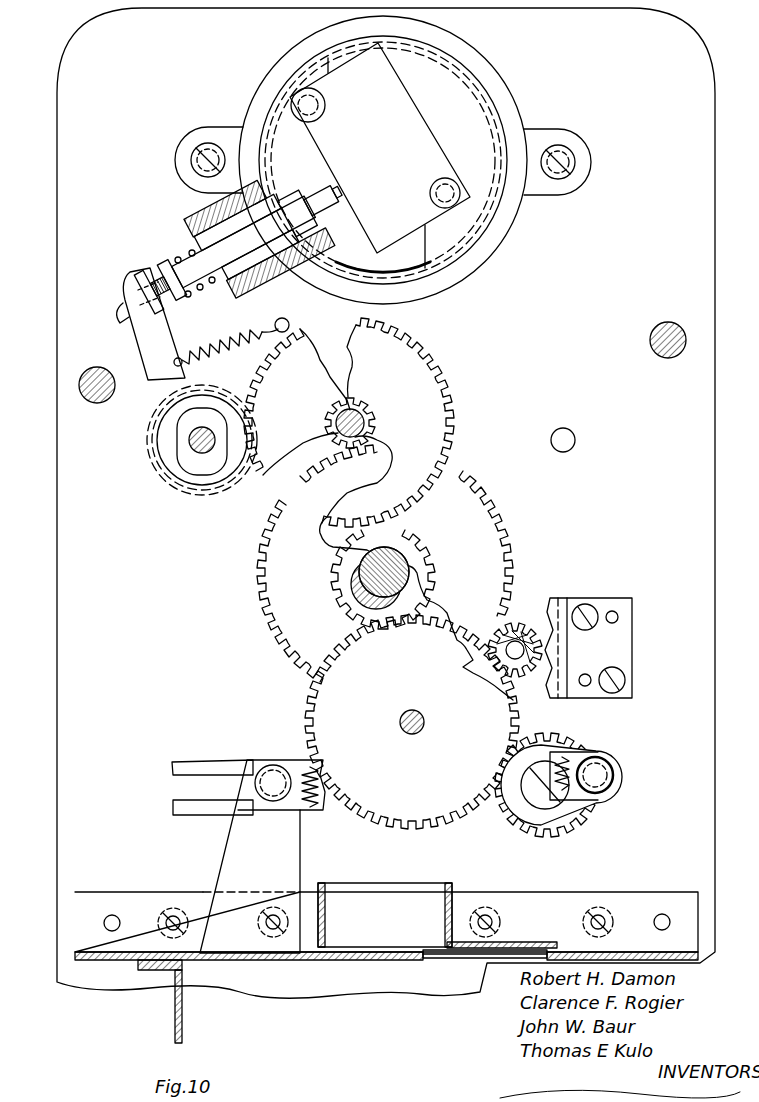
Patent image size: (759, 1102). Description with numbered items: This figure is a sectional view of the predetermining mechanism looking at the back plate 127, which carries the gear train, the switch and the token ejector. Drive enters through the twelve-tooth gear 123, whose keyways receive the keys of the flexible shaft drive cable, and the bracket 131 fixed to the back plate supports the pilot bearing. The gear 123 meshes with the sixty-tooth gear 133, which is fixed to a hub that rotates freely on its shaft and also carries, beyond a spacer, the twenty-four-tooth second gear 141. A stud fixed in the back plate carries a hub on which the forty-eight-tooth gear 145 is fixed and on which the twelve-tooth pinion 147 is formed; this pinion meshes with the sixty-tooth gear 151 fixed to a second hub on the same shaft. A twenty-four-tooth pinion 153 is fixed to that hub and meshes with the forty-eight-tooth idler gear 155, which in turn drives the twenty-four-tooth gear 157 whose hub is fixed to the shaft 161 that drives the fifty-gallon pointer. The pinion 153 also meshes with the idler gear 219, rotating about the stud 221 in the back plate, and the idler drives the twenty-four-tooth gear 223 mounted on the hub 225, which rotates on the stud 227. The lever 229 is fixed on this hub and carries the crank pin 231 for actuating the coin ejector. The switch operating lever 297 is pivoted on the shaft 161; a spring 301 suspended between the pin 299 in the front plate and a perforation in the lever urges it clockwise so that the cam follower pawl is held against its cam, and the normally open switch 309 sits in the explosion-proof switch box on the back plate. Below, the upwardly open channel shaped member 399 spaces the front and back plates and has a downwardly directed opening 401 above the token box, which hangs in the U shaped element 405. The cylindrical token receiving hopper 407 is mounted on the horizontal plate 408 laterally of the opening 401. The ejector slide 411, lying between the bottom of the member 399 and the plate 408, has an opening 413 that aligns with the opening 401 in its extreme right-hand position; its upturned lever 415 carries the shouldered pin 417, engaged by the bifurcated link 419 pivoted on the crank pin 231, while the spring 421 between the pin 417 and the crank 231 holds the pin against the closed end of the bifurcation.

The back plate 127 is at (634, 280).
The normally open switch 309 is at (405, 114).
The switch operating lever 297 is at (153, 342).
The spring 301 is at (210, 337).
The pin 299 is at (288, 323).
The pinion 147 is at (372, 410).
The gear 145 is at (438, 412).
The idler gear 155 is at (280, 457).
The shaft 161 is at (192, 453).
The gear 157 is at (223, 490).
The gear 151 is at (283, 585).
The gear 133 is at (490, 545).
The second gear 141 is at (430, 560).
The pinion 153 is at (357, 595).
The idler gear 219 is at (330, 718).
The stud 221 is at (408, 733).
The gear 123 is at (513, 622).
The bracket 131 is at (618, 633).
The gear 223 is at (577, 830).
The lever 229 is at (580, 812).
The stud 227 is at (515, 838).
The hub 225 is at (548, 813).
The spring 421 is at (577, 750).
The crank pin 231 is at (603, 773).
The lever 415 is at (243, 853).
The shouldered pin 417 is at (253, 795).
The bifurcated link 419 is at (247, 765).
The channel shaped member 399 is at (93, 948).
The ejector slide 411 is at (230, 956).
The opening 401 is at (433, 957).
The opening 413 is at (437, 961).
The horizontal plate 408 is at (508, 943).
The token receiving hopper 407 is at (332, 887).
The U shaped element 405 is at (177, 1017).